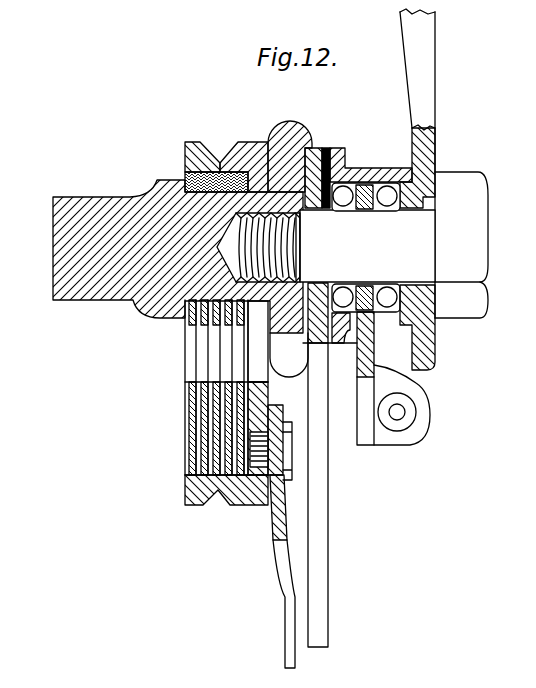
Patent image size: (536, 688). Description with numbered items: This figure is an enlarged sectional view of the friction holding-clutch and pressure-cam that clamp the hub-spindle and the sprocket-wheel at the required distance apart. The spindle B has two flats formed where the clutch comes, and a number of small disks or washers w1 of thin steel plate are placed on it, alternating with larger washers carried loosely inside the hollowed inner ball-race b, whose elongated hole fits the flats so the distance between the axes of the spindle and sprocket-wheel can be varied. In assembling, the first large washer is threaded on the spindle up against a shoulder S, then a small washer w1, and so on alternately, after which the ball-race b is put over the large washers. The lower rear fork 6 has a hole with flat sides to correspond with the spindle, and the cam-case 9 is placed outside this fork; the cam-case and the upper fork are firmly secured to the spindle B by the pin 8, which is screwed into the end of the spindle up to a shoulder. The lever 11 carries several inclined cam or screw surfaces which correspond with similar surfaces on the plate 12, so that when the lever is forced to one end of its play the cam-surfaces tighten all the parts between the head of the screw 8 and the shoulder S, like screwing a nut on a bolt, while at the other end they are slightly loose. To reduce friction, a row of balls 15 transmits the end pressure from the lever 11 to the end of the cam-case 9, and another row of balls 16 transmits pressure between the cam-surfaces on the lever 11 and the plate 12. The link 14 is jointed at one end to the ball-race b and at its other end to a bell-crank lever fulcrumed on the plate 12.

The spindle B is at (157, 232).
The shoulder S is at (170, 180).
The lower rear fork 6 is at (298, 130).
The plate 12 is at (323, 150).
The cam-case 9 is at (357, 168).
The balls 16 is at (343, 246).
The balls 15 is at (387, 246).
The pin 8 is at (392, 245).
The lever 11 is at (372, 363).
The small disks or washers w1 is at (188, 325).
The inner ball-race b is at (262, 500).
The link 14 is at (289, 613).